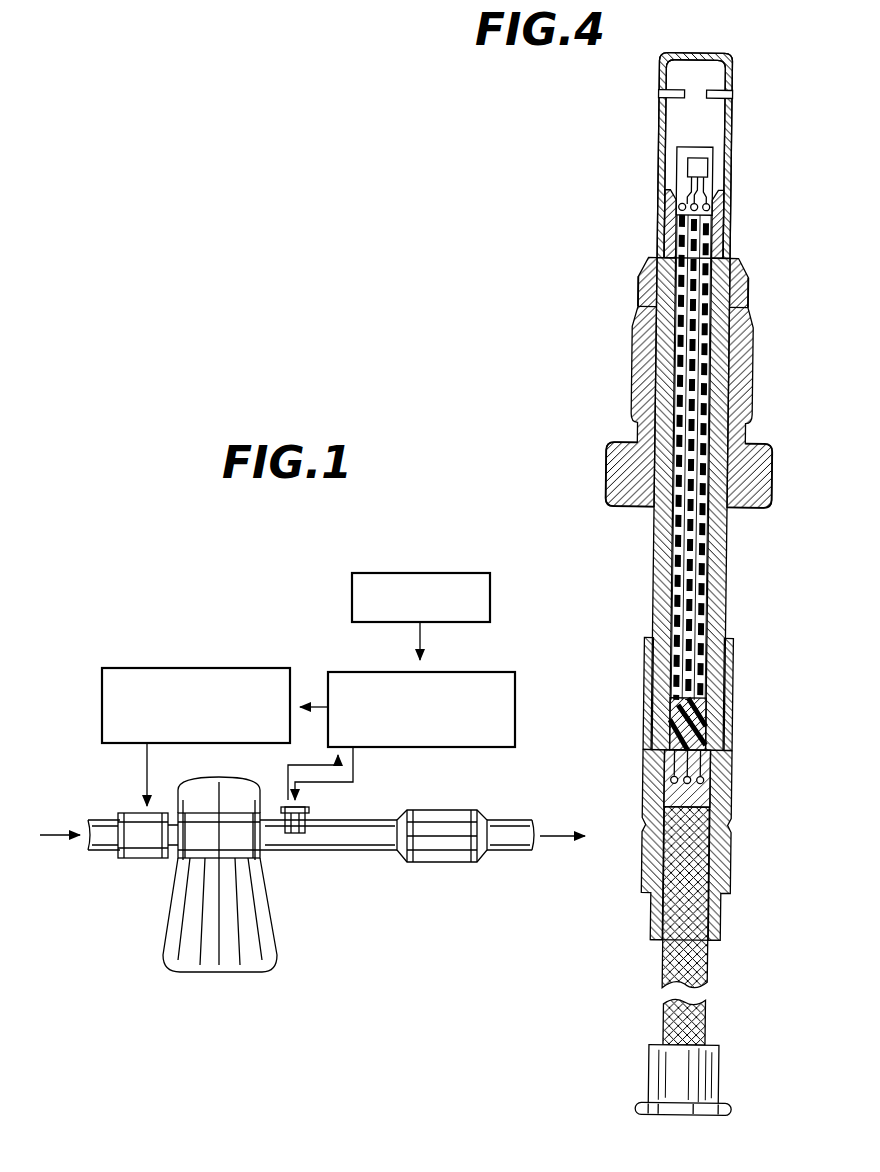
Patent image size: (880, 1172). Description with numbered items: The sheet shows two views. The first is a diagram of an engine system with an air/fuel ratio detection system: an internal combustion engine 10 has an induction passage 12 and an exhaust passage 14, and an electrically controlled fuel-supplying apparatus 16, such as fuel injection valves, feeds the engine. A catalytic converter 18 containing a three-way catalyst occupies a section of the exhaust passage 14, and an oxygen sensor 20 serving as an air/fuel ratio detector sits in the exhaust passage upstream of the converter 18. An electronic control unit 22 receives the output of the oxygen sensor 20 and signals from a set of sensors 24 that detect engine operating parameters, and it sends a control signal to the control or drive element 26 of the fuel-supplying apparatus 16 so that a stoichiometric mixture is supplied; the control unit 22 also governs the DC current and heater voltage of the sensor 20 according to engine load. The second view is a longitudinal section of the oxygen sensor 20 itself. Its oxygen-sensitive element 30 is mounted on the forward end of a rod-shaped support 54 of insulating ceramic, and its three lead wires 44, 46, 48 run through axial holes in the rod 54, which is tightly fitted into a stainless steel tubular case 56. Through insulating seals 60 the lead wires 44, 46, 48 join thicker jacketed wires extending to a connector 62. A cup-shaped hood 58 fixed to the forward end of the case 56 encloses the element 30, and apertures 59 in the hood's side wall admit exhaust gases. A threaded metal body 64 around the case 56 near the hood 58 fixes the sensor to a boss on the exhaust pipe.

In FIG. 1, the internal combustion engine 10 is at (258, 920).
In FIG. 1, the induction passage 12 is at (100, 851).
In FIG. 1, the exhaust passage 14 is at (368, 851).
In FIG. 1, the fuel-supplying apparatus 16 is at (130, 815).
In FIG. 1, the catalytic converter 18 is at (455, 862).
In FIG. 4, the oxygen sensor 20 is at (632, 288).
In FIG. 1, the oxygen sensor 20 is at (305, 828).
In FIG. 1, the electronic control unit 22 is at (488, 748).
In FIG. 1, the sensors 24 is at (467, 572).
In FIG. 1, the control or drive element 26 is at (258, 668).
In FIG. 4, the oxygen-sensitive element 30 is at (683, 153).
In FIG. 4, the lead wire 44 is at (668, 240).
In FIG. 4, the lead wire 46 is at (651, 276).
In FIG. 4, the lead wire 48 is at (716, 258).
In FIG. 4, the rod-shaped support 54 is at (672, 543).
In FIG. 4, the tubular case 56 is at (657, 605).
In FIG. 4, the cup-shaped hood 58 is at (659, 136).
In FIG. 4, the apertures 59 is at (660, 94).
In FIG. 4, the insulating seals 60 is at (660, 722).
In FIG. 4, the connector 62 is at (663, 1068).
In FIG. 4, the threaded metal body 64 is at (613, 460).